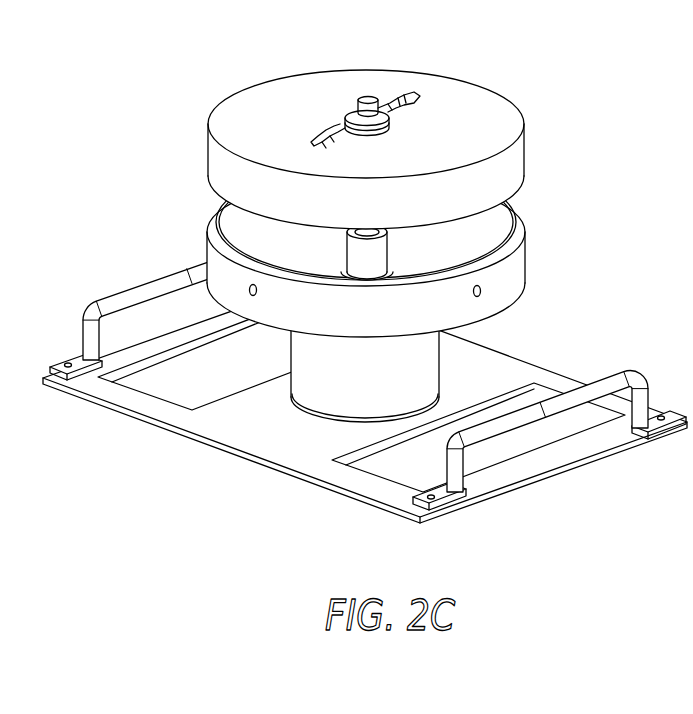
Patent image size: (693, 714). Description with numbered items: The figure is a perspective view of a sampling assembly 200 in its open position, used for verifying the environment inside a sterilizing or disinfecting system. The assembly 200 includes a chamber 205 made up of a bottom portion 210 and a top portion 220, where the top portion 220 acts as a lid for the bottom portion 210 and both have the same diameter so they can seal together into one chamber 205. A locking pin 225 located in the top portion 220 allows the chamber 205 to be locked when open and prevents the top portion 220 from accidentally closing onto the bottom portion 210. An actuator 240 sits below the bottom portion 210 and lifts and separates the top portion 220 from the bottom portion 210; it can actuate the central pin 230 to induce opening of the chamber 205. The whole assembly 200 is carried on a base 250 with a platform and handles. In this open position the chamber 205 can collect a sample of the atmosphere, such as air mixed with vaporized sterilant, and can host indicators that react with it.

The sampling assembly 200 is at (365, 279).
The chamber 205 is at (248, 234).
The bottom portion 210 is at (349, 250).
The top portion 220 is at (525, 161).
The locking pin 225 is at (402, 93).
The central pin 230 is at (389, 255).
The actuator 240 is at (440, 368).
The base 250 is at (194, 468).